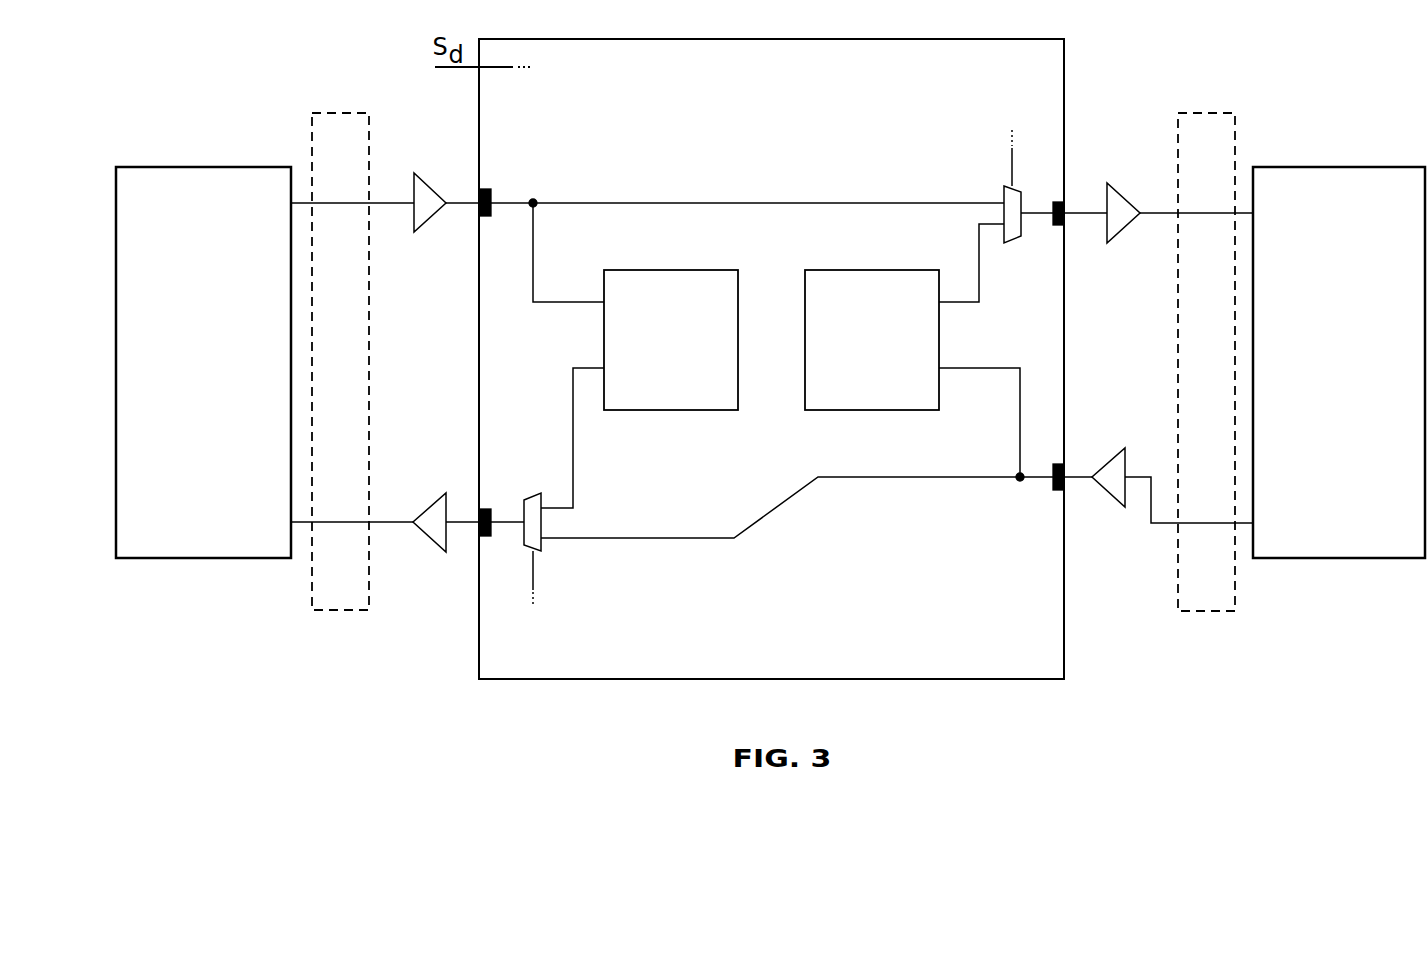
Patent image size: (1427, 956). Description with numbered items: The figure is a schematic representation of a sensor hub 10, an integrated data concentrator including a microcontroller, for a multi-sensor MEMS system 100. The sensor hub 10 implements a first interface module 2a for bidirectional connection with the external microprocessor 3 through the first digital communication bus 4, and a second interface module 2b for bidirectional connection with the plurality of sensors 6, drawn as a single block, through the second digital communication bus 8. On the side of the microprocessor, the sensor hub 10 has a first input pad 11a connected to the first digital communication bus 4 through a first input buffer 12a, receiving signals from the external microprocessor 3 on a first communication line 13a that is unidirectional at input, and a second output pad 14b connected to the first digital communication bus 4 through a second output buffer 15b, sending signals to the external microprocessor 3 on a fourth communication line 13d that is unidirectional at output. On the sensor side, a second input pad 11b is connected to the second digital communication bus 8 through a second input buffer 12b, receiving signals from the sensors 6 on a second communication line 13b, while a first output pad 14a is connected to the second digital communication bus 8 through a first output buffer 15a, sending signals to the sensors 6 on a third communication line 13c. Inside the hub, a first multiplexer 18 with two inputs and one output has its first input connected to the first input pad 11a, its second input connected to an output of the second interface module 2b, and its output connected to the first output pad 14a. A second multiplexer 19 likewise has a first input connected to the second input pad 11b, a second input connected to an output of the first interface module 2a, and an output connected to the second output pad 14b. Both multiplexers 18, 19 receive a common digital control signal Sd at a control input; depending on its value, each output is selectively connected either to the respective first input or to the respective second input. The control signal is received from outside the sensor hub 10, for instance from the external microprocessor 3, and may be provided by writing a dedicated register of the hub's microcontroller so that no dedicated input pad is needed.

The multi-sensor MEMS system 100 is at (1147, 41).
The sensor hub 10 is at (585, 39).
The external microprocessor 3 is at (187, 545).
The first digital communication bus 4 is at (333, 612).
The sensors 6 is at (1353, 540).
The second digital communication bus 8 is at (1212, 613).
The first interface module 2a is at (723, 282).
The second interface module 2b is at (813, 277).
The first input pad 11a is at (492, 197).
The second input pad 11b is at (1052, 485).
The first output pad 14a is at (1056, 202).
The second output pad 14b is at (486, 508).
The first input buffer 12a is at (422, 213).
The second input buffer 12b is at (1105, 477).
The first output buffer 15a is at (1118, 222).
The second output buffer 15b is at (425, 535).
The first communication line 13a is at (388, 203).
The second communication line 13b is at (1152, 526).
The third communication line 13c is at (1160, 213).
The fourth communication line 13d is at (393, 522).
The first multiplexer 18 is at (1010, 243).
The second multiplexer 19 is at (542, 525).